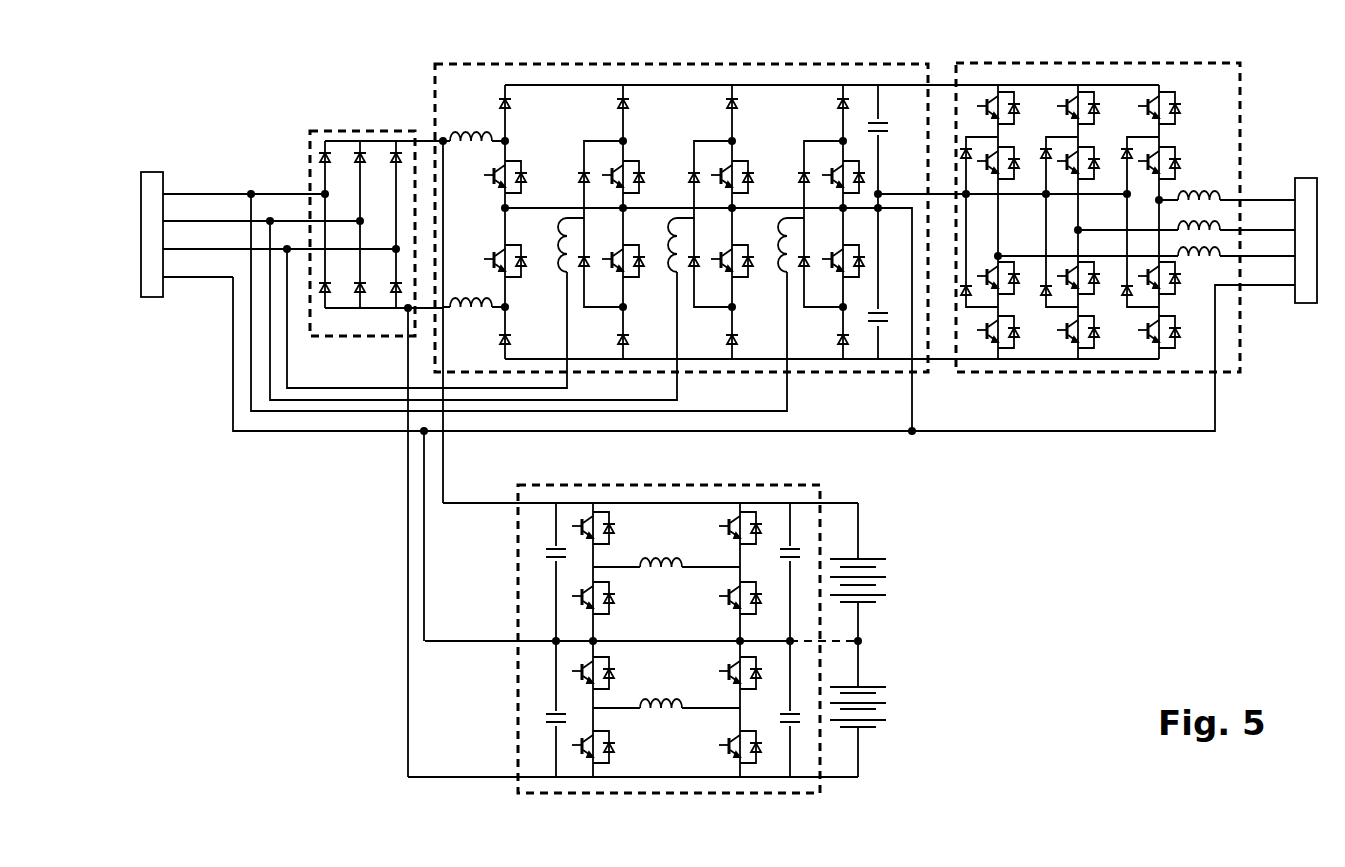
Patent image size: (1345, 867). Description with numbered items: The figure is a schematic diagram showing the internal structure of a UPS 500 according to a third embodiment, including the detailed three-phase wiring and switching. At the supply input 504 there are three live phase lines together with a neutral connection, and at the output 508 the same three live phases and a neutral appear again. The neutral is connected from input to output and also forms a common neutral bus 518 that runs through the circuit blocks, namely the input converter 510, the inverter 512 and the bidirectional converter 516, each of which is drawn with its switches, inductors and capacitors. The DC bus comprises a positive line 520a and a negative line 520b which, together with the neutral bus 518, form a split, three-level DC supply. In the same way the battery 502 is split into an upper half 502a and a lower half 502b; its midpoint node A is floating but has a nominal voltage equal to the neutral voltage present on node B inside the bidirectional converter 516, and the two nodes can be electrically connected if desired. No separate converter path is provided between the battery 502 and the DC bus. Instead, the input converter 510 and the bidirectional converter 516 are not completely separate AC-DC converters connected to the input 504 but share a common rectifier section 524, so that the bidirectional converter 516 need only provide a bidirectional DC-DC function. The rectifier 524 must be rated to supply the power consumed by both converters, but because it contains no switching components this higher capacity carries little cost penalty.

The UPS 500 is at (1056, 532).
The battery 502 is at (943, 640).
The upper half of battery 502a is at (886, 577).
The lower half of battery 502b is at (905, 711).
The supply input 504 is at (160, 298).
The output 508 is at (1305, 305).
The input converter 510 is at (672, 63).
The inverter 512 is at (1178, 63).
The bidirectional converter 516 is at (820, 485).
The neutral bus 518 is at (912, 431).
The positive line of DC bus 520a is at (945, 83).
The negative line of DC bus 520b is at (940, 364).
The rectifier section 524 is at (318, 131).